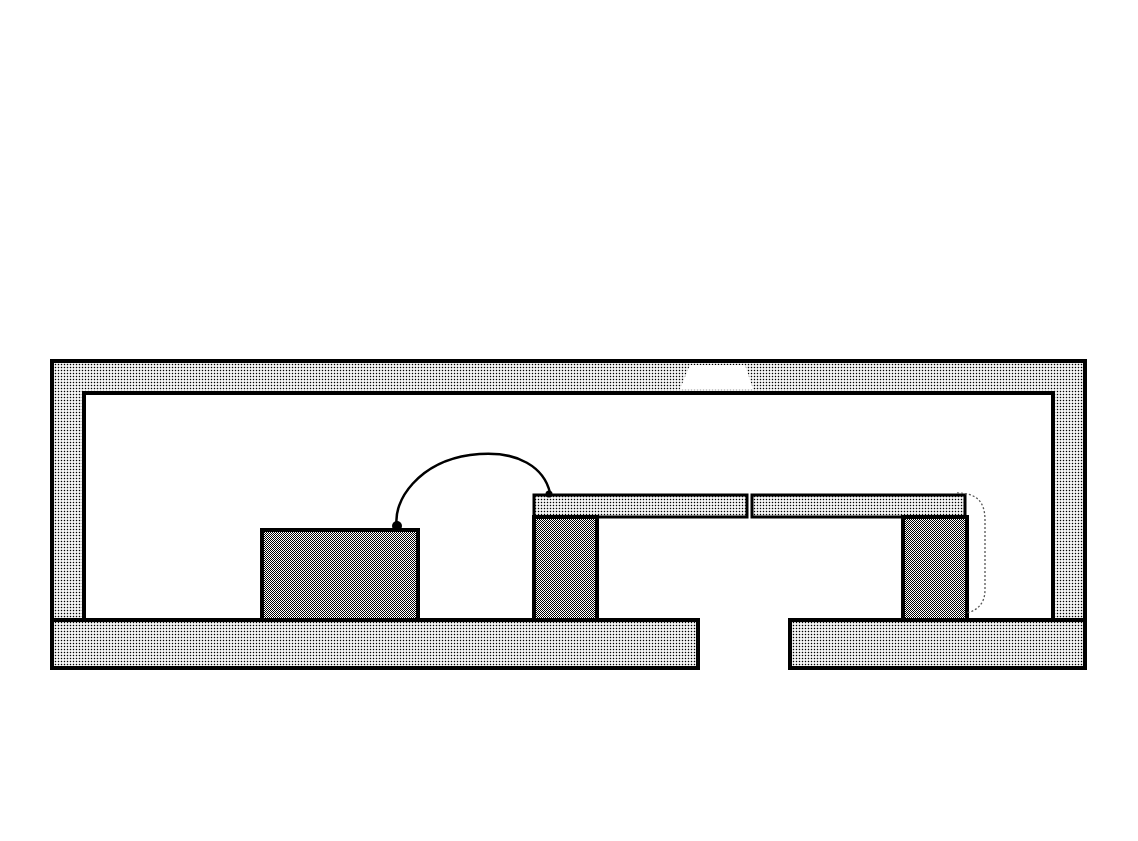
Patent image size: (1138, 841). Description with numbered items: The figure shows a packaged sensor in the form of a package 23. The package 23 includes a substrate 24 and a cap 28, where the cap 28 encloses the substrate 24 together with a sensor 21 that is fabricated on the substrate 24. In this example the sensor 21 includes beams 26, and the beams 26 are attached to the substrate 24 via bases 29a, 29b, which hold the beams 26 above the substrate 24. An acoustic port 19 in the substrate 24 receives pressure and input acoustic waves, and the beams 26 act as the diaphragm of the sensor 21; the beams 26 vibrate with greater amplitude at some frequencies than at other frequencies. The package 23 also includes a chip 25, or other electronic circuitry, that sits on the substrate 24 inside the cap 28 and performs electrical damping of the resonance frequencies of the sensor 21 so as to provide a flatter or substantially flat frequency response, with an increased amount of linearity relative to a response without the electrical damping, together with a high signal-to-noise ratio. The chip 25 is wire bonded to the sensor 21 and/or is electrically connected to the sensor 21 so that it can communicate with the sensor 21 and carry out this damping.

The package 23 is at (108, 74).
The cap 28 is at (846, 353).
The substrate 24 is at (375, 644).
The acoustic port 19 is at (899, 644).
The chip 25 is at (407, 537).
The base 29a is at (640, 557).
The base 29b is at (859, 557).
The beams 26 is at (826, 538).
The sensor 21 is at (985, 557).